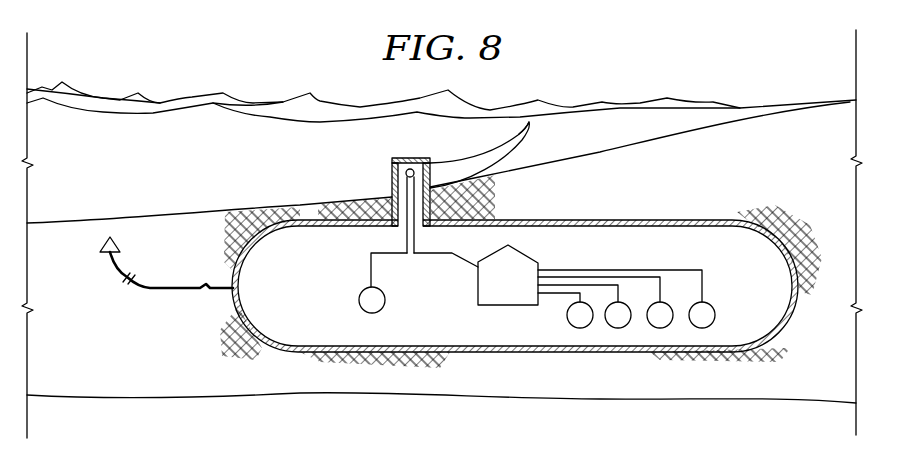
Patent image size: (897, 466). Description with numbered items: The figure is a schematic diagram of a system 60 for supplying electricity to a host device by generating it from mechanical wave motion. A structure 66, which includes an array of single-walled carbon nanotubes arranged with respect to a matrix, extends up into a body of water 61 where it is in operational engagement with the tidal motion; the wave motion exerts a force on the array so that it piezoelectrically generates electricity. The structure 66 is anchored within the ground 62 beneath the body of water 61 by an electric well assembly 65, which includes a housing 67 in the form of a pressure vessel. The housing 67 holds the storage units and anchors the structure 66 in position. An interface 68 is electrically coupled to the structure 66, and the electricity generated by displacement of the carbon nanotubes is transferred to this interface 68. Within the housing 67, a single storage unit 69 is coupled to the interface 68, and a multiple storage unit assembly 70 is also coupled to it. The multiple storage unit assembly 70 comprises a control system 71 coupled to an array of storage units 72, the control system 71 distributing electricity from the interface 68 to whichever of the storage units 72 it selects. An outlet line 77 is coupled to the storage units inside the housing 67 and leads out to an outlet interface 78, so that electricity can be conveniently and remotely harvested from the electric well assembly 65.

The system 60 is at (632, 73).
The body of water 61 is at (96, 176).
The ground 62 is at (107, 350).
The electric well assembly 65 is at (711, 201).
The structure 66 is at (458, 160).
The housing 67 is at (558, 219).
The interface 68 is at (410, 168).
The single storage unit 69 is at (359, 300).
The multiple storage unit assembly 70 is at (605, 258).
The control system 71 is at (478, 287).
The array of storage units 72 is at (713, 299).
The outlet line 77 is at (175, 283).
The outlet interface 78 is at (99, 244).